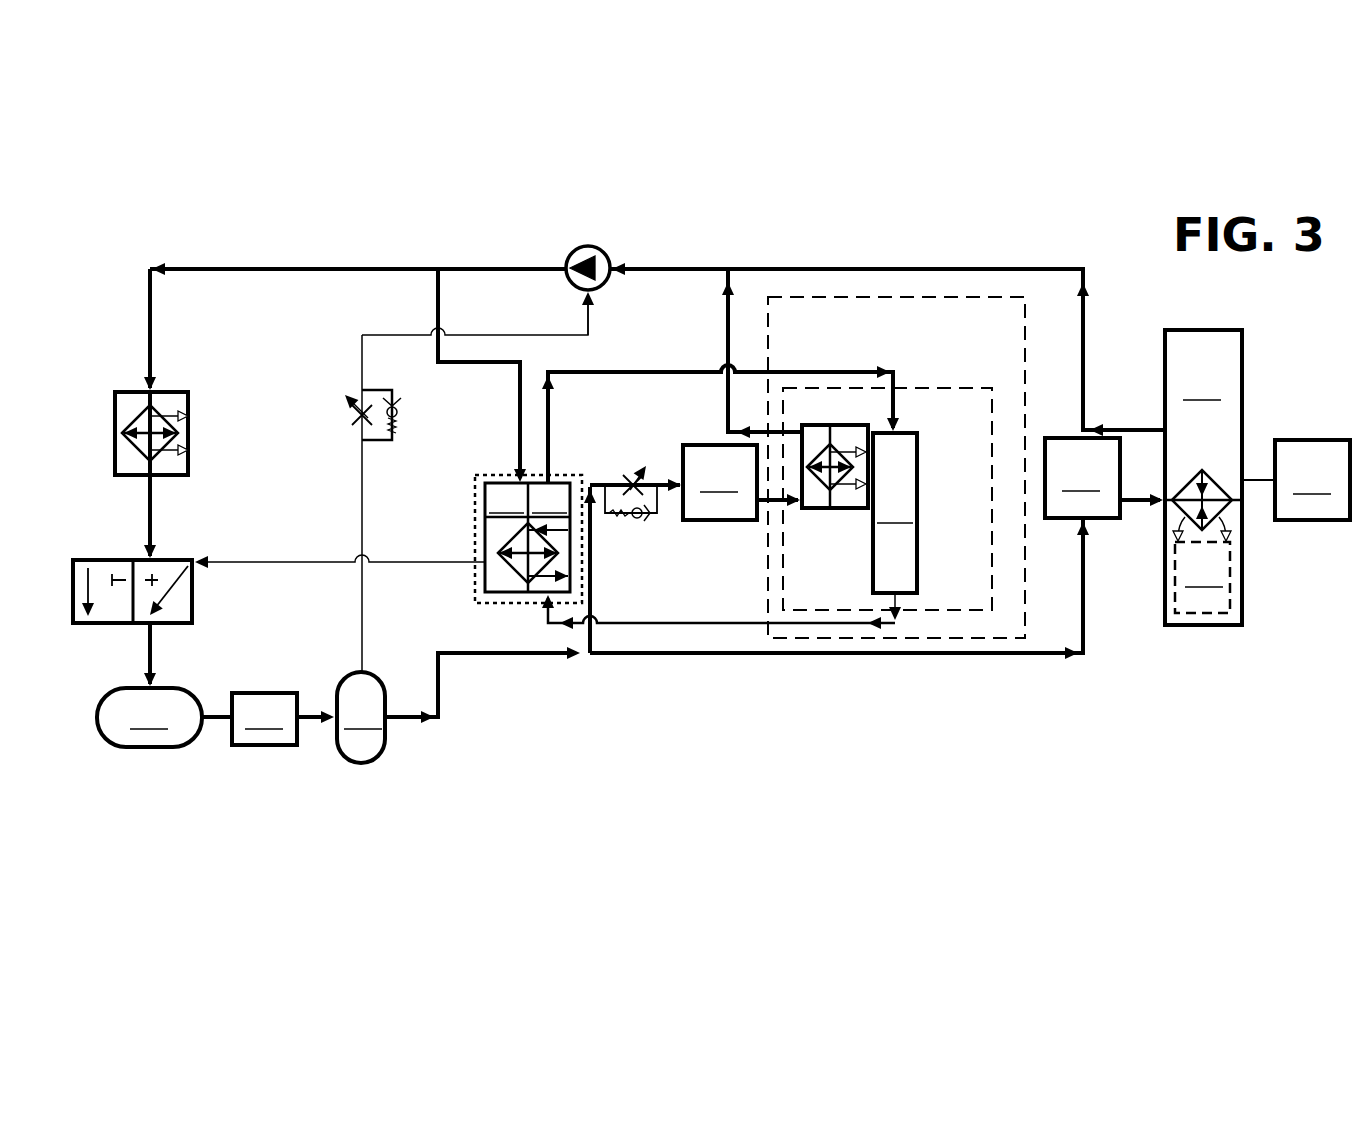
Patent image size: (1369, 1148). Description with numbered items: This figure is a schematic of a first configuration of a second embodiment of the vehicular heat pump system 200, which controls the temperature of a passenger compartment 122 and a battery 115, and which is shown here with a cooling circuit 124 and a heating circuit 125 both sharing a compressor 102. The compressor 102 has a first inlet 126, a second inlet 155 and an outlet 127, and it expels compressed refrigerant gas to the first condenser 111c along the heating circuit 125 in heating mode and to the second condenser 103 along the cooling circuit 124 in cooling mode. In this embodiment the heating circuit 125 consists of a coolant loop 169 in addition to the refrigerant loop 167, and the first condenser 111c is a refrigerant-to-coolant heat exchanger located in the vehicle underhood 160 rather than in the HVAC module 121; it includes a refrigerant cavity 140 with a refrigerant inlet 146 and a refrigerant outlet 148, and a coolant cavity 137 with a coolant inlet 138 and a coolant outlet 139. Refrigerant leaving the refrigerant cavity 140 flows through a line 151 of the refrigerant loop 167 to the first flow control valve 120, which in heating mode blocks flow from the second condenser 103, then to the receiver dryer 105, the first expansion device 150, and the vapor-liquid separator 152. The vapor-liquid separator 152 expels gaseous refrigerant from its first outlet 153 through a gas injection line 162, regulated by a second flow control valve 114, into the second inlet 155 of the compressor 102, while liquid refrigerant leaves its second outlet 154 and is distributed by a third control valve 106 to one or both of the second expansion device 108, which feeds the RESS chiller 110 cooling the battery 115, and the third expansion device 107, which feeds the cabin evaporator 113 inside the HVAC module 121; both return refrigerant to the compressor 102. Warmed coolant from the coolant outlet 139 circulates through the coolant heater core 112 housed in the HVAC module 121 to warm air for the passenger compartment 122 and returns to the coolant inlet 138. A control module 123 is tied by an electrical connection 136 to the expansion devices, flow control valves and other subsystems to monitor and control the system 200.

The compressor 102 is at (593, 246).
The second condenser 103 is at (115, 402).
The receiver dryer 105 is at (164, 717).
The third control valve 106 is at (612, 516).
The third expansion device 107 is at (741, 482).
The second expansion device 108 is at (1104, 478).
The RESS chiller 110 is at (1203, 477).
The first condenser 111c is at (533, 592).
The coolant heater core 112 is at (895, 513).
The cabin evaporator 113 is at (840, 510).
The second flow control valve 114 is at (392, 390).
The battery 115 is at (1202, 577).
The first flow control valve 120 is at (72, 575).
The HVAC module 121 is at (935, 386).
The passenger compartment 122 is at (935, 300).
The control module 123 is at (1312, 480).
The cooling circuit 124 is at (146, 292).
The heating circuit 125 is at (428, 312).
The first inlet 126 is at (614, 262).
The outlet 127 is at (563, 262).
The electrical connection 136 is at (1257, 478).
The coolant cavity 137 is at (550, 504).
The coolant inlet 138 is at (560, 592).
The coolant outlet 139 is at (552, 478).
The refrigerant cavity 140 is at (507, 504).
The refrigerant inlet 146 is at (512, 474).
The refrigerant outlet 148 is at (480, 560).
The first expansion device 150 is at (264, 719).
The line 151 is at (330, 724).
The vapor-liquid separator 152 is at (361, 717).
The first outlet 153 is at (364, 672).
The second outlet 154 is at (387, 722).
The second inlet 155 is at (600, 292).
The vehicle underhood 160 is at (578, 478).
The gas injection line 162 is at (546, 330).
The refrigerant loop 167 is at (487, 258).
The coolant loop 169 is at (650, 365).
The heat pump system 200 is at (865, 228).